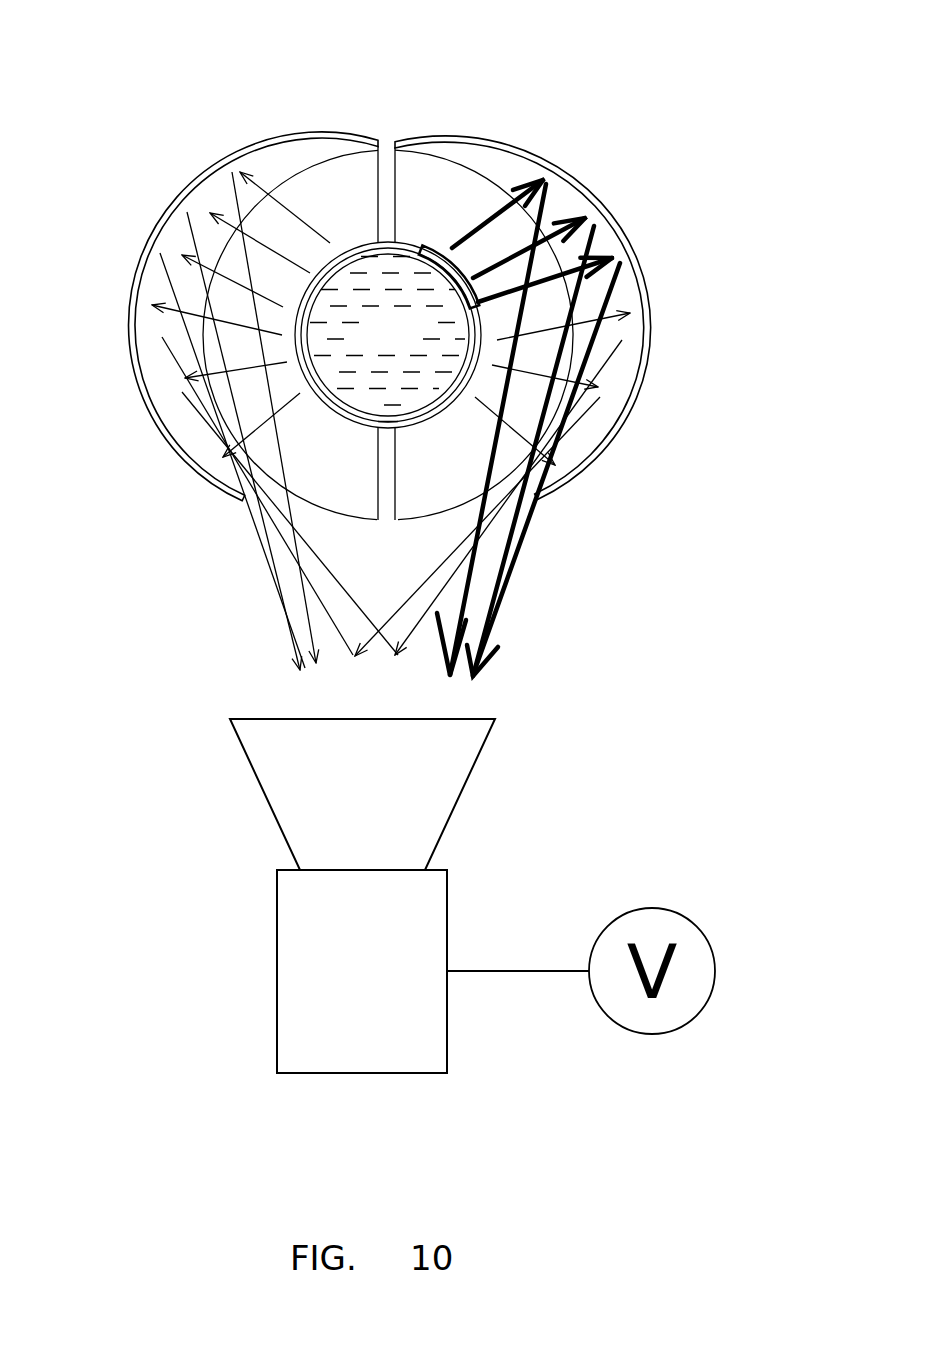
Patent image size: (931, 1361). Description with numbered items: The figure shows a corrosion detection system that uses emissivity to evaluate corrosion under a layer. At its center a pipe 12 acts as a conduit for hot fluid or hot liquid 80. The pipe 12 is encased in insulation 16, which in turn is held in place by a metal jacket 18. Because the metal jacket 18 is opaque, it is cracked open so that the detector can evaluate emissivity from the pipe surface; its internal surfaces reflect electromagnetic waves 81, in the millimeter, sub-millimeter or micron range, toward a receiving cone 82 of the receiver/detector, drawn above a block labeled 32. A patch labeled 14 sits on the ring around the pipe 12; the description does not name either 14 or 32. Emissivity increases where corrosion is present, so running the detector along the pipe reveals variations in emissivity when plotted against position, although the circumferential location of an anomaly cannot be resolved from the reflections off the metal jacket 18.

The pipe 12 is at (305, 393).
The metal jacket 18 is at (649, 347).
The insulation 16 is at (423, 177).
The sensor patch 14 is at (443, 252).
The hot fluid or hot liquid 80 is at (400, 355).
The electromagnetic waves 81 is at (458, 602).
The receiving cone 82 is at (428, 795).
The detector unit 32 is at (312, 988).